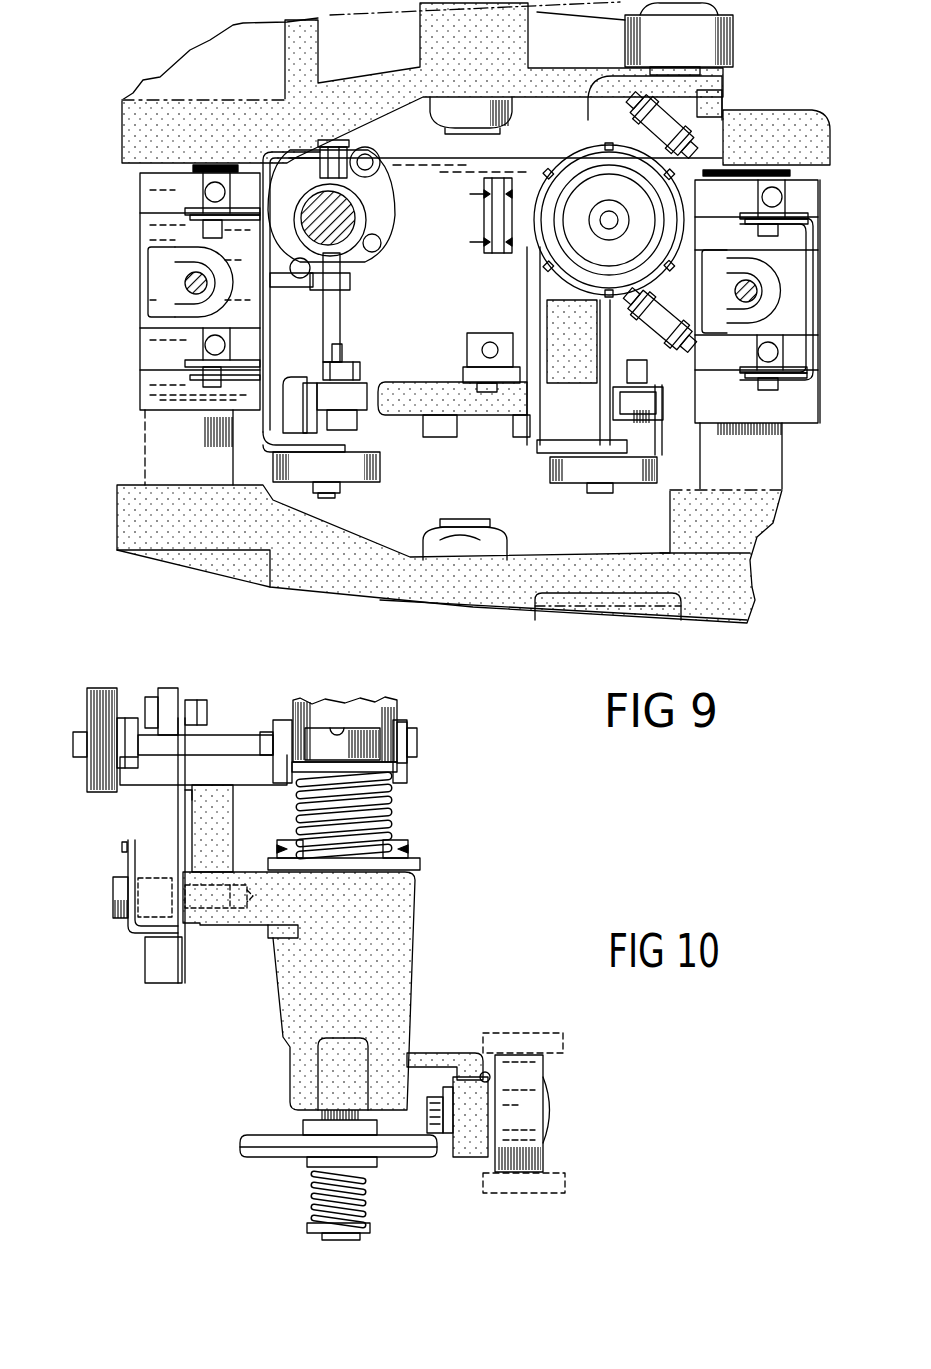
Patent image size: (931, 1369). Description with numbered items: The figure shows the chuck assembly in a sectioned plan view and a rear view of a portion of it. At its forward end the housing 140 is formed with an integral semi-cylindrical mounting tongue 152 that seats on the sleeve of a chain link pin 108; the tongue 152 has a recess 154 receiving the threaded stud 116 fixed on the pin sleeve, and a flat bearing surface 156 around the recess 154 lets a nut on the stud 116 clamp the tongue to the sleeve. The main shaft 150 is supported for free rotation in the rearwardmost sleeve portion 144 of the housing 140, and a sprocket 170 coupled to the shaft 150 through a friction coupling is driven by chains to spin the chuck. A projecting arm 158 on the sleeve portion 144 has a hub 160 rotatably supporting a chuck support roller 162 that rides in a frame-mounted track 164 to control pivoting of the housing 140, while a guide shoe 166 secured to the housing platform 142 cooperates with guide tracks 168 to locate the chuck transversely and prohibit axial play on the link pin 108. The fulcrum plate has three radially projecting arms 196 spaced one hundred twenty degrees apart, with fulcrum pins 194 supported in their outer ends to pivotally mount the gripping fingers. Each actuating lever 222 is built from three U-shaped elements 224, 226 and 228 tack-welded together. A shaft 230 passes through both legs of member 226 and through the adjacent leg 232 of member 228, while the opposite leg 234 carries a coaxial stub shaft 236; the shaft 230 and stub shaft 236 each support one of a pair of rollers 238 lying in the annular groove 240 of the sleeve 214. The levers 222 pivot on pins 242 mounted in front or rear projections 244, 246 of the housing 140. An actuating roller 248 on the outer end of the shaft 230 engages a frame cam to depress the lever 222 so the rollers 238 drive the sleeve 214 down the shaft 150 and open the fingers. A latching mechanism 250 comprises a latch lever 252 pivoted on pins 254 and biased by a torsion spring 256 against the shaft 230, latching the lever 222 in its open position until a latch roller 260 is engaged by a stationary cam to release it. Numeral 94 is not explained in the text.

In FIG. 9, the slot 94 is at (603, 596).
In FIG. 9, the chain link pin 108 is at (150, 461).
In FIG. 9, the threaded stud 116 is at (160, 250).
In FIG. 9, the housing 140 is at (410, 362).
In FIG. 10, the housing 140 is at (420, 918).
In FIG. 9, the housing platform 142 is at (430, 291).
In FIG. 10, the housing platform 142 is at (220, 925).
In FIG. 10, the sleeve portion 144 is at (377, 993).
In FIG. 9, the main shaft 150 is at (348, 212).
In FIG. 9, the mounting tongue 152 is at (140, 392).
In FIG. 9, the recess 154 is at (183, 285).
In FIG. 9, the flat bearing surface 156 is at (180, 305).
In FIG. 10, the projecting arm 158 is at (440, 1065).
In FIG. 10, the hub 160 is at (462, 1157).
In FIG. 9, the chuck support roller 162 is at (712, 48).
In FIG. 10, the chuck support roller 162 is at (523, 1082).
In FIG. 10, the track 164 is at (537, 1043).
In FIG. 9, the guide shoe 166 is at (450, 405).
In FIG. 10, the guide shoe 166 is at (160, 970).
In FIG. 9, the guide track 168 is at (432, 440).
In FIG. 10, the sprocket 170 is at (247, 1147).
In FIG. 9, the fulcrum pin 194 is at (673, 132).
In FIG. 9, the radially projecting arm 196 is at (510, 265).
In FIG. 10, the sleeve 214 is at (410, 700).
In FIG. 9, the actuating lever assembly 222 is at (276, 325).
In FIG. 10, the actuating lever assembly 222 is at (208, 775).
In FIG. 9, the U-shaped element 224 is at (190, 212).
In FIG. 9, the U-shaped element 226 is at (263, 442).
In FIG. 10, the U-shaped element 226 is at (143, 785).
In FIG. 9, the U-shaped element 228 is at (262, 152).
In FIG. 10, the U-shaped element 228 is at (405, 773).
In FIG. 9, the shaft 230 is at (341, 349).
In FIG. 10, the shaft 230 is at (262, 720).
In FIG. 9, the leg 232 is at (302, 280).
In FIG. 9, the leg 234 is at (305, 160).
In FIG. 10, the leg 234 is at (417, 725).
In FIG. 9, the stub shaft 236 is at (345, 150).
In FIG. 9, the roller 238 is at (381, 158).
In FIG. 10, the roller 238 is at (303, 743).
In FIG. 10, the annular groove 240 is at (343, 740).
In FIG. 9, the pivot pin 242 is at (210, 235).
In FIG. 9, the front projection 244 is at (190, 365).
In FIG. 9, the rear projection 246 is at (467, 347).
In FIG. 9, the actuating roller 248 is at (335, 482).
In FIG. 10, the actuating roller 248 is at (97, 703).
In FIG. 9, the latching mechanism 250 is at (360, 410).
In FIG. 10, the latching mechanism 250 is at (207, 699).
In FIG. 9, the latch lever 252 is at (293, 378).
In FIG. 10, the latch lever 252 is at (175, 840).
In FIG. 10, the pivot pin 254 is at (113, 897).
In FIG. 10, the torsion spring 256 is at (145, 876).
In FIG. 10, the latch roller 260 is at (170, 698).